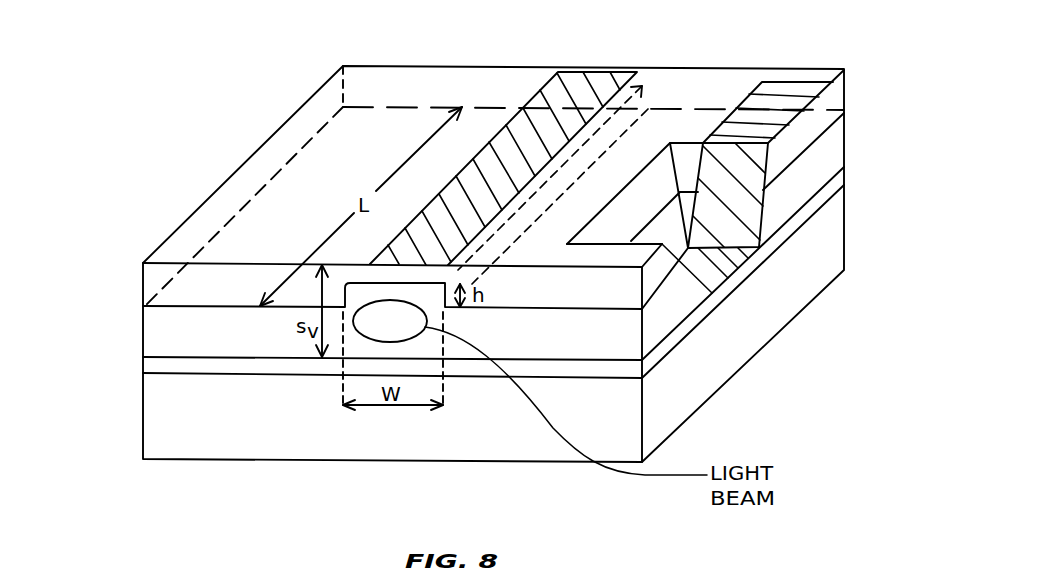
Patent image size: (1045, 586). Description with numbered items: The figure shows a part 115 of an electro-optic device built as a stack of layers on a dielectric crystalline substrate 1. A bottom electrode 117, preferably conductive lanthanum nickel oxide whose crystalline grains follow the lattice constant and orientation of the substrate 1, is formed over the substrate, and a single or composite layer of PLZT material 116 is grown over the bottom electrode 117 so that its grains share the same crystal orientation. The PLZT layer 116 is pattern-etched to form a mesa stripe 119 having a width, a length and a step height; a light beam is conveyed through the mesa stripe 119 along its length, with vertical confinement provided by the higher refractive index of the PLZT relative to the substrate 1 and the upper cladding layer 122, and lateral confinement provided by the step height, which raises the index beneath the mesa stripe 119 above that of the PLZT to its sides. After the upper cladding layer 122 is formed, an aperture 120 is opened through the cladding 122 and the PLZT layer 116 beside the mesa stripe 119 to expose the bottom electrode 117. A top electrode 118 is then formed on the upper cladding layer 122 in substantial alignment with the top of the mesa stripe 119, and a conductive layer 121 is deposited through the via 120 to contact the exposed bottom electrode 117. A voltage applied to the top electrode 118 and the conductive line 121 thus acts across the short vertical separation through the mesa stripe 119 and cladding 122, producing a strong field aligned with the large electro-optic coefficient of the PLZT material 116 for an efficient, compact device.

The dielectric crystalline substrate 1 is at (152, 450).
The part of an electro-optic device 115 is at (102, 513).
The PLZT material layer 116 is at (153, 325).
The bottom electrode 117 is at (153, 368).
The top electrode 118 is at (573, 80).
The mesa stripe 119 is at (648, 109).
The aperture 120 is at (628, 217).
The conductive layer 121 is at (803, 92).
The upper cladding layer 122 is at (143, 281).